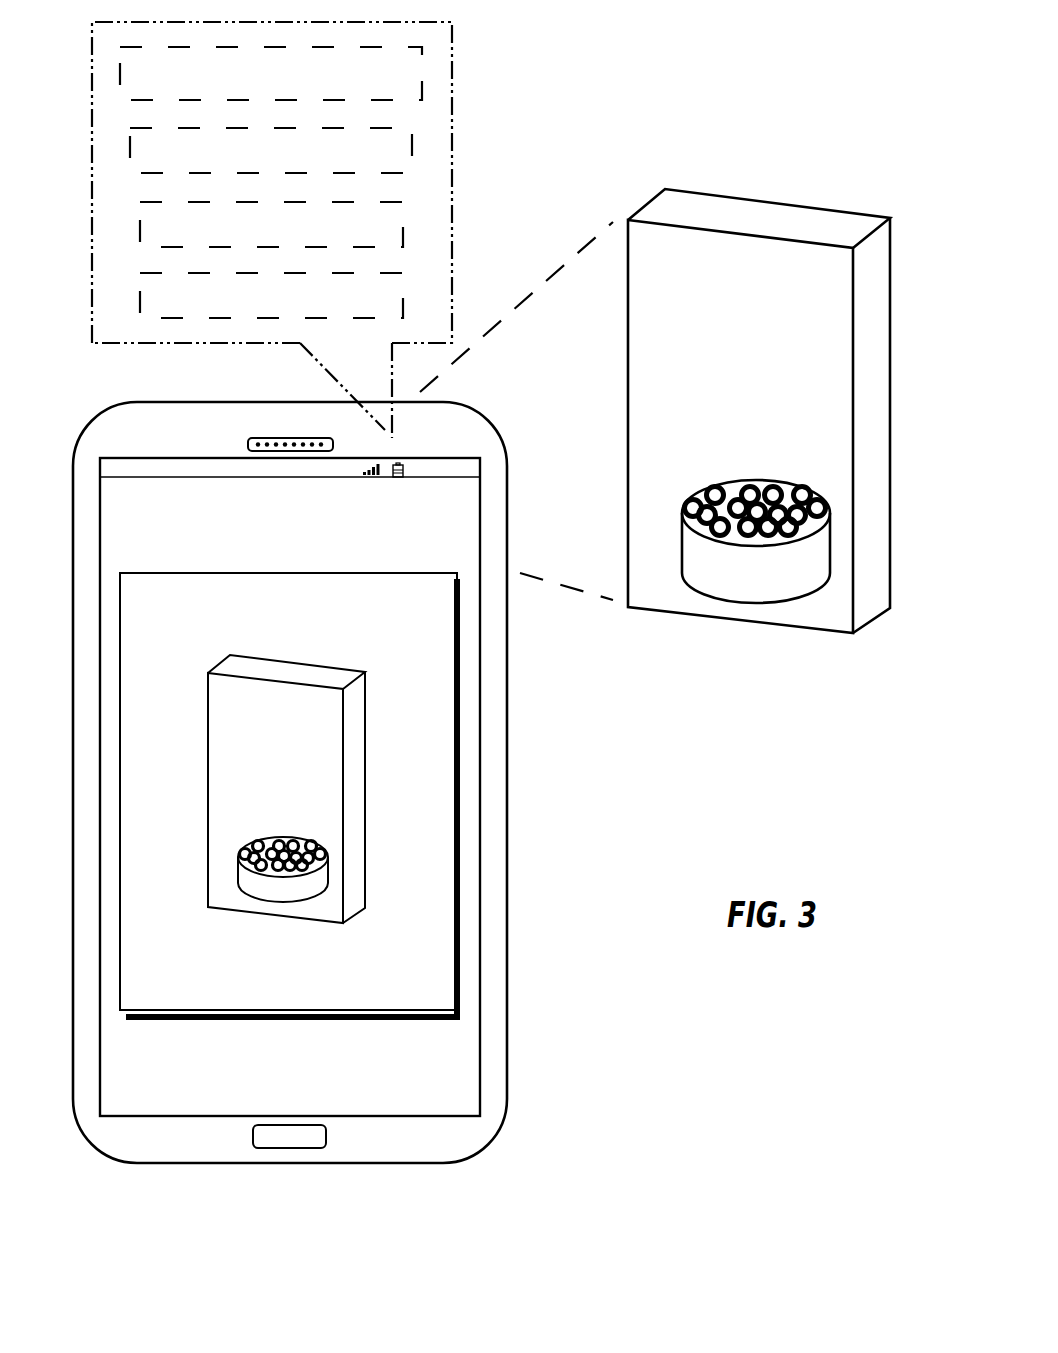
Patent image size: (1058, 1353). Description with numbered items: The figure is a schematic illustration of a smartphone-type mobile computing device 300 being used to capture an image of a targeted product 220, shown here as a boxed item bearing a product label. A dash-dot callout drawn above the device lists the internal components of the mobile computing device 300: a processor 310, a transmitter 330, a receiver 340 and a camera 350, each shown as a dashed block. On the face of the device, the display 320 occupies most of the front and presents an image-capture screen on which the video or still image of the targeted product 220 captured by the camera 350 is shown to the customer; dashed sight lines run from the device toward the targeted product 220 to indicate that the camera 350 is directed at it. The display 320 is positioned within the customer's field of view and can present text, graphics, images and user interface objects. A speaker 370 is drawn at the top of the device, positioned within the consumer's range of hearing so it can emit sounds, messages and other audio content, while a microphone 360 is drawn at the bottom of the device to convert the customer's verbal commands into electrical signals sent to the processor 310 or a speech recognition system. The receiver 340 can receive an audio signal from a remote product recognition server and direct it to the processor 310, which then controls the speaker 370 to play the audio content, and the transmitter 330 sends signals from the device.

The targeted product 220 is at (722, 202).
The mobile computing device 300 is at (556, 827).
The processor 310 is at (271, 73).
The display 320 is at (481, 692).
The transmitter 330 is at (271, 150).
The receiver 340 is at (271, 224).
The camera 350 is at (271, 295).
The microphone 360 is at (293, 1163).
The speaker 370 is at (268, 438).